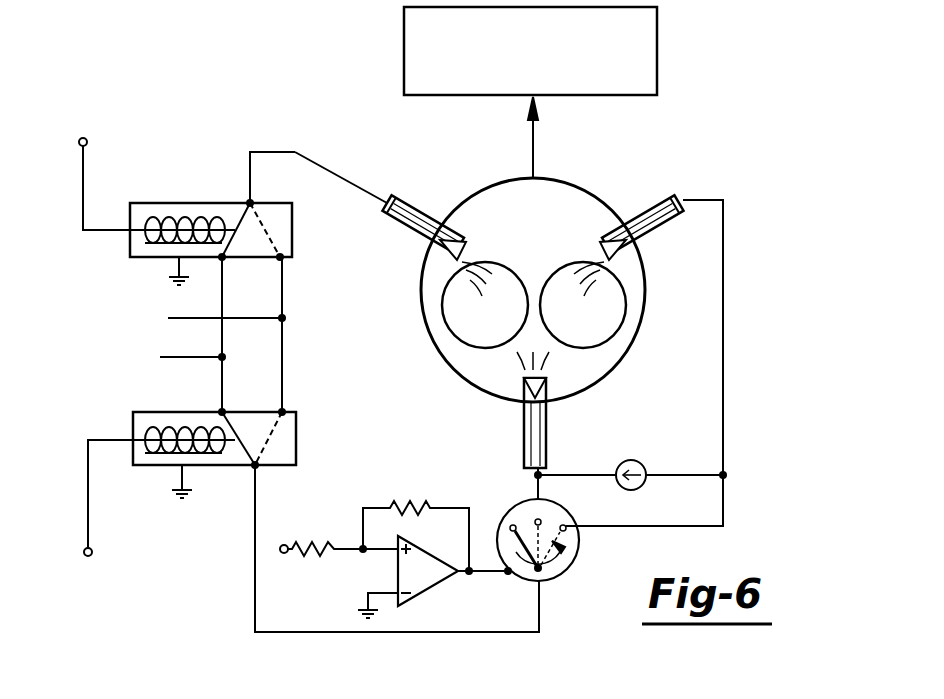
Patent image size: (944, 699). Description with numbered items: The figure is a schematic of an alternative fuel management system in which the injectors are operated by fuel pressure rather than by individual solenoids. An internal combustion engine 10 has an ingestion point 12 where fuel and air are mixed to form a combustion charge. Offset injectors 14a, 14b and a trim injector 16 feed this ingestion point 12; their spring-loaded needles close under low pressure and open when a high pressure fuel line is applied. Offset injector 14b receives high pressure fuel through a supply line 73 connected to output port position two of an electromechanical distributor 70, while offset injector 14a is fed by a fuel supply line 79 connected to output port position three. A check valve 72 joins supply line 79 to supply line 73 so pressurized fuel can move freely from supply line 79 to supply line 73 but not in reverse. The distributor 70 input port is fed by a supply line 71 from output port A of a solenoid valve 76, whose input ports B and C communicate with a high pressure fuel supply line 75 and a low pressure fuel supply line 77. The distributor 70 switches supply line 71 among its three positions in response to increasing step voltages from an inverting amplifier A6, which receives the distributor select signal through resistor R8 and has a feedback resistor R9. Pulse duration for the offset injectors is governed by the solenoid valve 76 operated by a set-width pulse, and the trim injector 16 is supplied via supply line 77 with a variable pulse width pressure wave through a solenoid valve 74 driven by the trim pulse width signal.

The internal combustion engine 10 is at (657, 68).
The ingestion point 12 is at (585, 192).
The trim injector 16 is at (410, 207).
The offset injector 14a is at (686, 192).
The offset injector 14b is at (523, 432).
The fuel supply line 79 is at (723, 348).
The check valve 72 is at (637, 461).
The supply line 73 is at (536, 486).
The electromechanical distributor 70 is at (579, 548).
The supply line 71 is at (418, 632).
The inverting amplifier A6 is at (426, 592).
The resistor R8 is at (336, 546).
The feedback resistor R9 is at (413, 507).
The solenoid valve 74 is at (292, 232).
The high pressure fuel supply line 75 is at (282, 355).
The solenoid valve 76 is at (296, 440).
The low pressure fuel supply line 77 is at (222, 370).